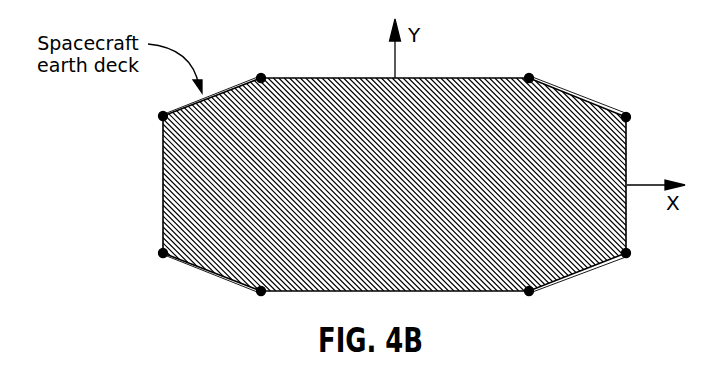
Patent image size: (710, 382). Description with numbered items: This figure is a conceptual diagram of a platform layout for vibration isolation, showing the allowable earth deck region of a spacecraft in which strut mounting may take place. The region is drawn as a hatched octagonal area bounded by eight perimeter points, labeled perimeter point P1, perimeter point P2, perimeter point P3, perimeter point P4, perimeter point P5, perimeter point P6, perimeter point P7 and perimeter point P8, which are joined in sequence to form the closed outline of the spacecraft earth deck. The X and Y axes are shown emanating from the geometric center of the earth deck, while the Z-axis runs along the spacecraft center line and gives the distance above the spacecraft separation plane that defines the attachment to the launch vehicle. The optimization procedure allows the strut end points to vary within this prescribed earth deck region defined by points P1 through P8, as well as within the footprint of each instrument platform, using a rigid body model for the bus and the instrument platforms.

The perimeter point P1 is at (640, 110).
The perimeter point P2 is at (640, 250).
The perimeter point P3 is at (543, 302).
The perimeter point P4 is at (246, 302).
The perimeter point P5 is at (148, 248).
The perimeter point P6 is at (152, 108).
The perimeter point P7 is at (263, 59).
The perimeter point P8 is at (536, 59).